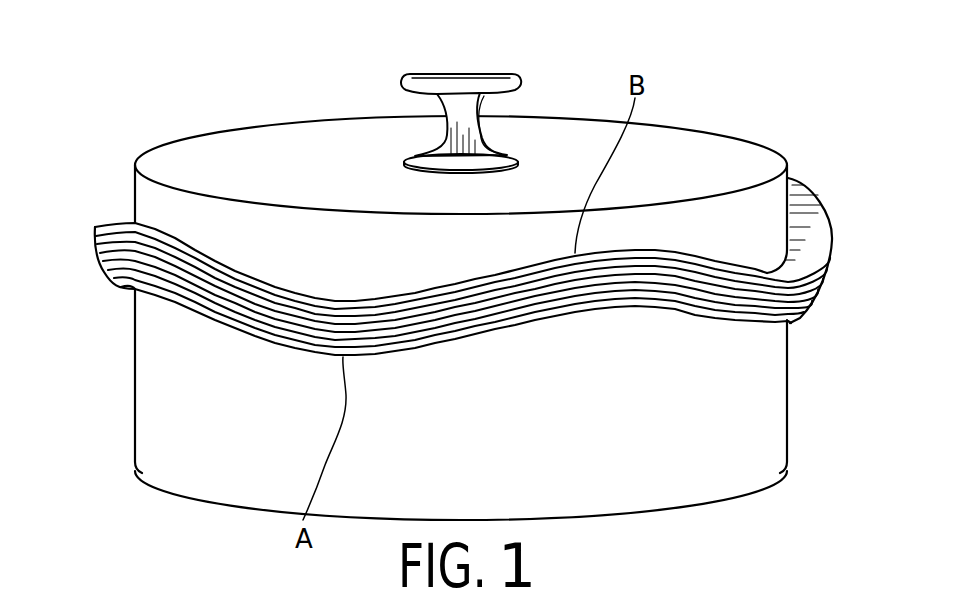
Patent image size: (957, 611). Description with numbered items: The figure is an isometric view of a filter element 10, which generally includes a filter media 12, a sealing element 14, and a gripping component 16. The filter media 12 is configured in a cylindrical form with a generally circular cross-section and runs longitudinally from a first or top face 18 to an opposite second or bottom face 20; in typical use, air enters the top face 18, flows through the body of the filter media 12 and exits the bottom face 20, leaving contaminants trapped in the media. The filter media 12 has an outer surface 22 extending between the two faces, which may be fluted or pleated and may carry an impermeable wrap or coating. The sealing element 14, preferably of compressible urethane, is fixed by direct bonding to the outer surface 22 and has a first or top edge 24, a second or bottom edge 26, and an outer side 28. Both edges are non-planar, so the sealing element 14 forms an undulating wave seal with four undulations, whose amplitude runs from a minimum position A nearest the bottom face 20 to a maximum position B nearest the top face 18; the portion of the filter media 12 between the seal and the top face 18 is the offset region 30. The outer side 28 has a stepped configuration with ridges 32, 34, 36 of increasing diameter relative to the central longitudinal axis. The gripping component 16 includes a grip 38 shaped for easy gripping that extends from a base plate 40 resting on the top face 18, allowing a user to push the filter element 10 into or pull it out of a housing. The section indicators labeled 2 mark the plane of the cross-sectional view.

The filter element 10 is at (777, 102).
The filter media 12 is at (457, 269).
The sealing element 14 is at (468, 264).
The gripping component 16 is at (484, 86).
The first or top face 18 is at (273, 133).
The second or bottom face 20 is at (760, 492).
The outer surface 22 is at (150, 399).
The first or top edge 24 is at (121, 226).
The second or bottom edge 26 is at (158, 283).
The outer side 28 is at (96, 227).
The offset region 30 is at (360, 265).
The ridge 32 is at (798, 320).
The ridge 34 is at (815, 284).
The ridge 36 is at (816, 230).
The grip 38 is at (512, 90).
The base plate 40 is at (413, 158).
The section line 2- 2 is at (157, 137).